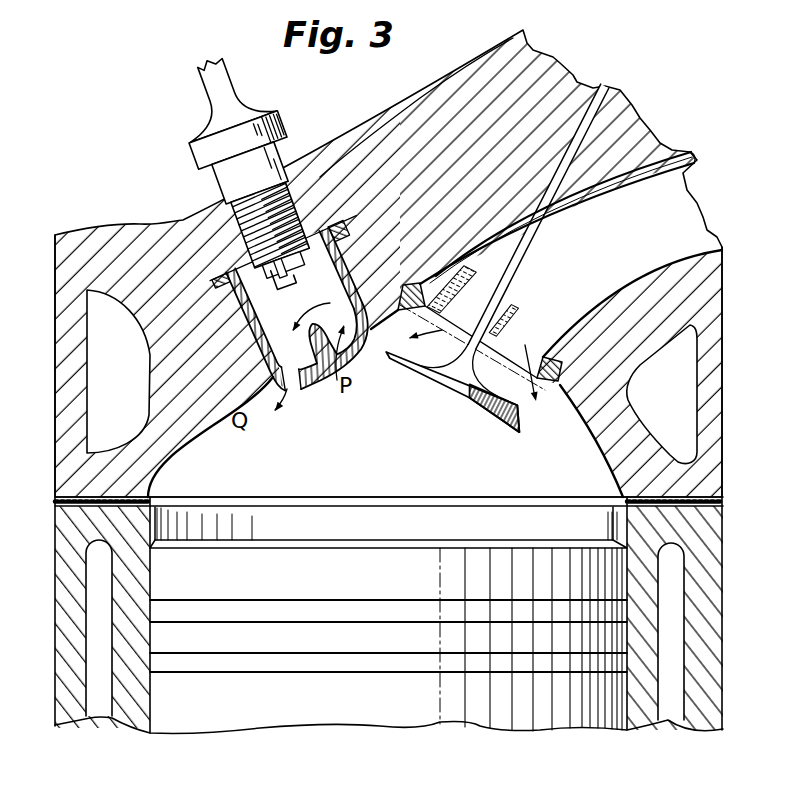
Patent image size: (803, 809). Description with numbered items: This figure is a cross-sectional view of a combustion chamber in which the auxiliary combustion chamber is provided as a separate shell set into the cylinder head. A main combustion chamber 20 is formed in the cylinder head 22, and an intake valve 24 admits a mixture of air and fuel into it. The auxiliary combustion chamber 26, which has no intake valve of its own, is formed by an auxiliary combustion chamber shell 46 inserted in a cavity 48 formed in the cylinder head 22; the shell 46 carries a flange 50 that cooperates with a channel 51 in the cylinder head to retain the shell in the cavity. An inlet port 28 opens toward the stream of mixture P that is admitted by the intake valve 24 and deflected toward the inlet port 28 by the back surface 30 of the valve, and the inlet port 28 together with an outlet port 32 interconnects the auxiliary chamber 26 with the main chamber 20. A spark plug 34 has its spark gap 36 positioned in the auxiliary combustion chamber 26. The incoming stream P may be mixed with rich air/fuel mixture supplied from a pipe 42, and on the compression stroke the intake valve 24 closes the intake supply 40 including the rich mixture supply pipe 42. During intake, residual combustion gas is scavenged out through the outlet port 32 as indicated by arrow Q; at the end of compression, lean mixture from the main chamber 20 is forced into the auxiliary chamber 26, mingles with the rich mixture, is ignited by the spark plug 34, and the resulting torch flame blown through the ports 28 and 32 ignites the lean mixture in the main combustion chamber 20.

The main combustion chamber 20 is at (390, 474).
The cylinder head 22 is at (532, 108).
The intake valve 24 is at (529, 243).
The auxiliary combustion chamber 26 is at (301, 304).
The inlet port 28 is at (480, 336).
The back surface 30 is at (455, 386).
The outlet port 32 is at (291, 378).
The spark plug 34 is at (250, 172).
The spark gap 36 is at (282, 272).
The intake supply 40 is at (522, 232).
The rich air/fuel mixture supply pipe 42 is at (557, 218).
The auxiliary combustion chamber shell 46 is at (307, 313).
The cavity 48 is at (341, 269).
The flange 50 is at (338, 230).
The channel 51 is at (221, 280).